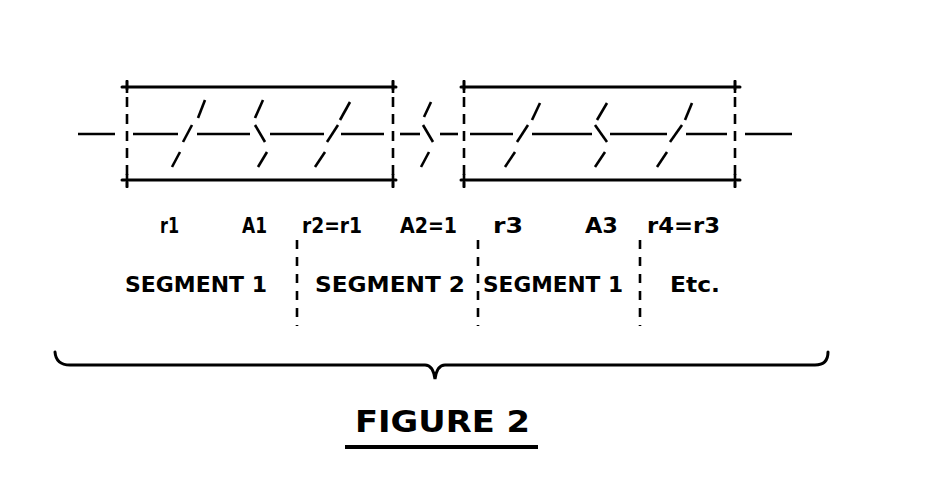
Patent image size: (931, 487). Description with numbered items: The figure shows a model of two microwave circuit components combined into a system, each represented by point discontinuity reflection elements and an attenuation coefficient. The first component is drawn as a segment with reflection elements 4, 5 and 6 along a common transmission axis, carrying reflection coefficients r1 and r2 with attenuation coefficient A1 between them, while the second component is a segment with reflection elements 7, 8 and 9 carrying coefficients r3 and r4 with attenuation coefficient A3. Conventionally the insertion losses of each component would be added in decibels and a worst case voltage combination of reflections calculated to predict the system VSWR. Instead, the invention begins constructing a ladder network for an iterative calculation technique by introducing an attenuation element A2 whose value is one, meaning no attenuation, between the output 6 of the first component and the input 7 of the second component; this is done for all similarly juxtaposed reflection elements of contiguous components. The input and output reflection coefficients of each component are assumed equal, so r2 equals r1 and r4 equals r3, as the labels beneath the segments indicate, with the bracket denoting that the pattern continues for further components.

The first segment element 4 is at (188, 130).
The second segment element 5 is at (253, 129).
The output 6 is at (332, 129).
The input 7 is at (518, 129).
The fifth segment element 8 is at (593, 130).
The sixth segment element 9 is at (675, 130).